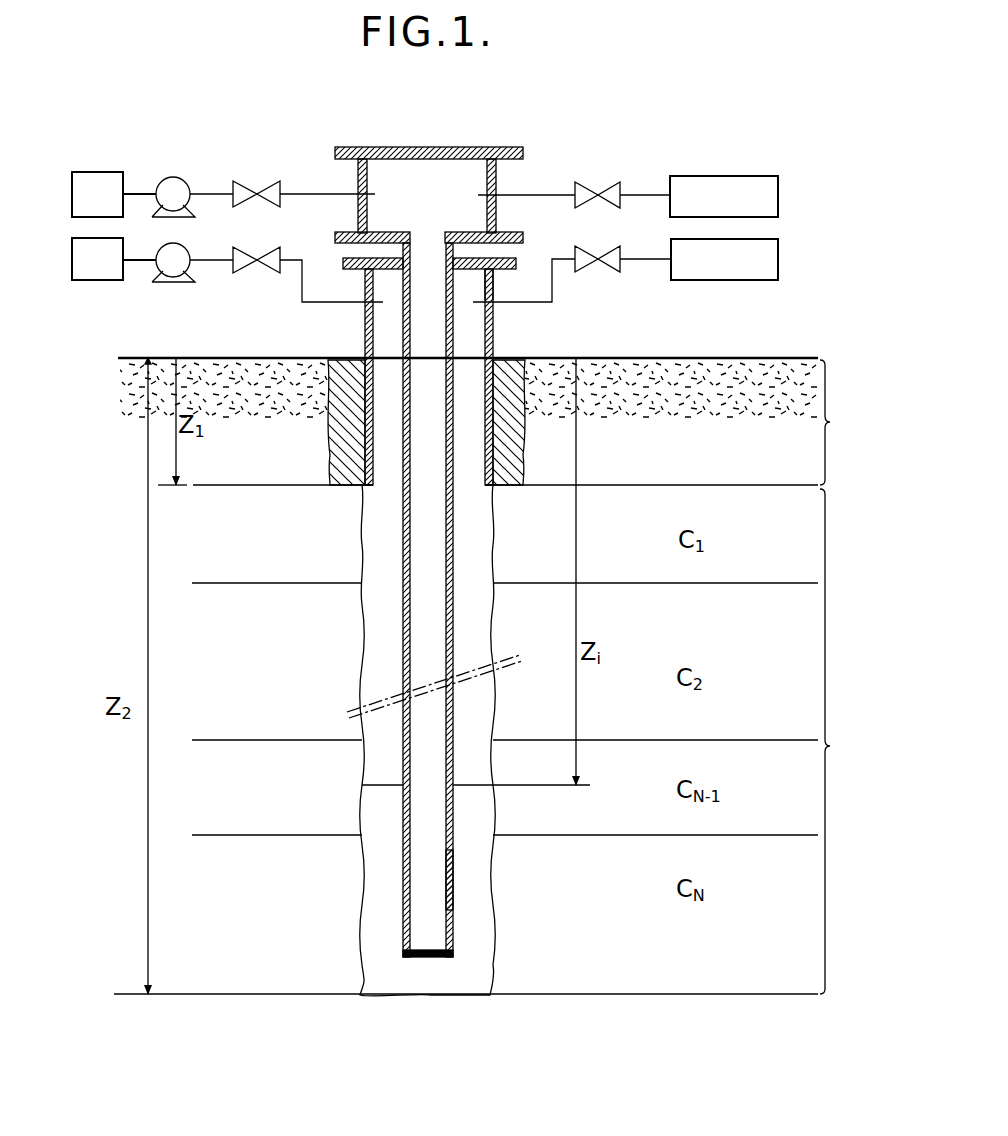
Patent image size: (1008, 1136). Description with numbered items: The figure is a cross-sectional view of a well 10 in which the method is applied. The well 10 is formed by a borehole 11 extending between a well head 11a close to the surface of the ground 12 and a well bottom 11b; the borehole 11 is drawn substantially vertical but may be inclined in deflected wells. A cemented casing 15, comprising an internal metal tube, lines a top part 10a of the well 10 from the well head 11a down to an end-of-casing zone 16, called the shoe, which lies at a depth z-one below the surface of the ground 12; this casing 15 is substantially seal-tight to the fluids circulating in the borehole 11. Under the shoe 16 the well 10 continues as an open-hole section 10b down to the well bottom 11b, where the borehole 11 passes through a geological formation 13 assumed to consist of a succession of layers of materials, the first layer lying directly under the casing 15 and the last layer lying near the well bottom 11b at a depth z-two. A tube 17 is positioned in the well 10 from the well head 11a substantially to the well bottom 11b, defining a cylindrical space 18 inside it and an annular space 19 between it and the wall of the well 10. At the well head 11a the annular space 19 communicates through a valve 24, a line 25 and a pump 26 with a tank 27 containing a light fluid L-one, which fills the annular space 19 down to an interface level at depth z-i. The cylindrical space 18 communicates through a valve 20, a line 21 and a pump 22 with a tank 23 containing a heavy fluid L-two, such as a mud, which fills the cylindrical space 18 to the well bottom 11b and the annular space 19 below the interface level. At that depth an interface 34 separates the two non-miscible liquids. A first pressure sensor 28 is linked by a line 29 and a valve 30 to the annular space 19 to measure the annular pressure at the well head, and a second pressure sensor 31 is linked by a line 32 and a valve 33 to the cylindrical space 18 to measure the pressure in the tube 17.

The well 10 is at (517, 127).
The top part of the well 10a is at (849, 422).
The open-hole section 10b is at (847, 741).
The borehole 11 is at (363, 542).
The well head 11a is at (497, 342).
The well bottom 11b is at (397, 972).
The surface of the ground 12 is at (655, 358).
The geological formation 13 is at (697, 467).
The cemented casing 15 is at (503, 445).
The end-of-casing zone 16 is at (514, 487).
The tube 17 is at (452, 882).
The cylindrical space 18 is at (433, 674).
The annular space 19 is at (378, 627).
The valve 20 is at (266, 190).
The line 21 is at (217, 194).
The pump 22 is at (173, 177).
The tank 23 is at (100, 170).
The valve 24 is at (270, 273).
The line 25 is at (209, 262).
The pump 26 is at (170, 282).
The tank 27 is at (88, 280).
The first pressure sensor 28 is at (727, 265).
The line 29 is at (645, 262).
The valve 30 is at (587, 266).
The second pressure sensor 31 is at (730, 190).
The line 32 is at (647, 194).
The valve 33 is at (612, 192).
The interface 34 is at (387, 785).